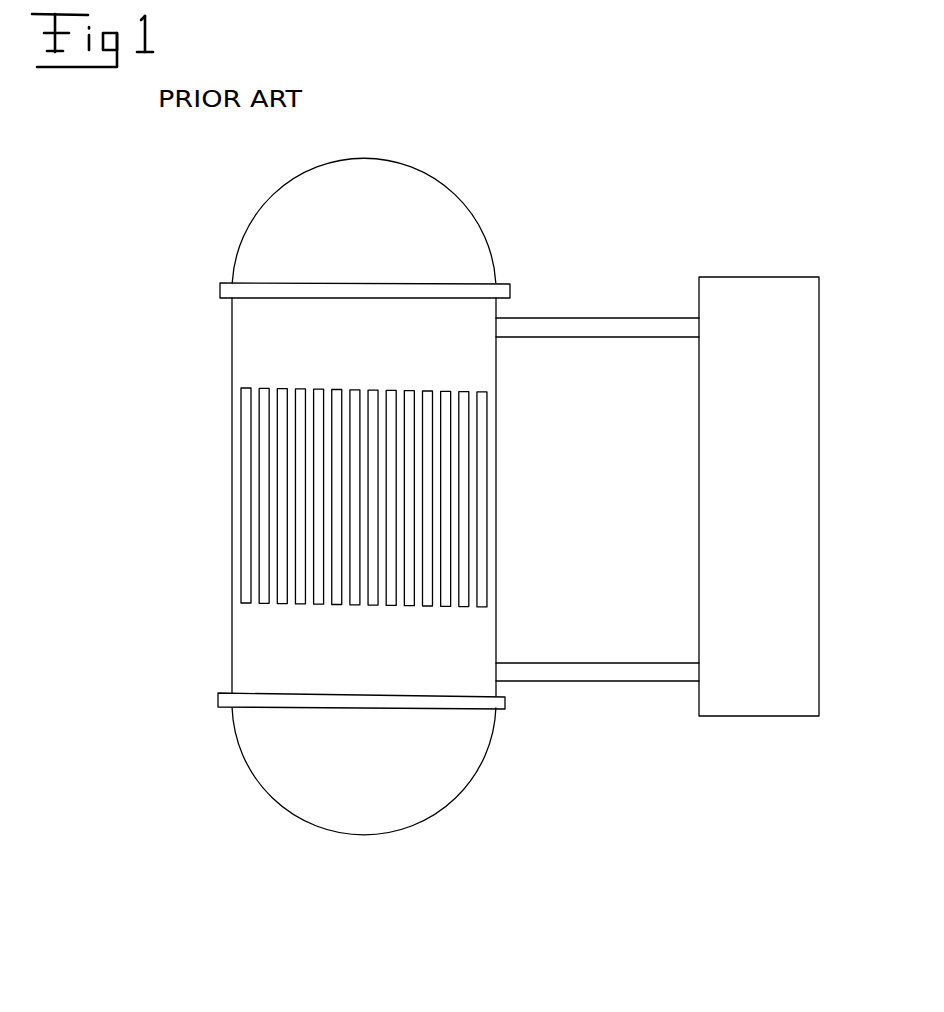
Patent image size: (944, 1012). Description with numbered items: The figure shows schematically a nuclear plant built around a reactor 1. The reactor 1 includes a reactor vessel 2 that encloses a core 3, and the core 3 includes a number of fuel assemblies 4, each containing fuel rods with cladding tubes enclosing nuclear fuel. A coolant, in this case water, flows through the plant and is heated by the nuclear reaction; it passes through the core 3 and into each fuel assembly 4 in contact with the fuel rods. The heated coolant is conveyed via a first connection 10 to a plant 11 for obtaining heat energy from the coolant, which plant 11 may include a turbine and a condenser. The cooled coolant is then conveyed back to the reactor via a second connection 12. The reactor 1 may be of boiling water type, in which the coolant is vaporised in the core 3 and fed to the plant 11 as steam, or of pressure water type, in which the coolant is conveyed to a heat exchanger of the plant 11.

The reactor 1 is at (315, 496).
The reactor vessel 2 is at (250, 352).
The core 3 is at (328, 497).
The fuel assemblies 4 is at (282, 562).
The first connection 10 is at (575, 325).
The plant 11 is at (796, 503).
The second connection 12 is at (596, 672).